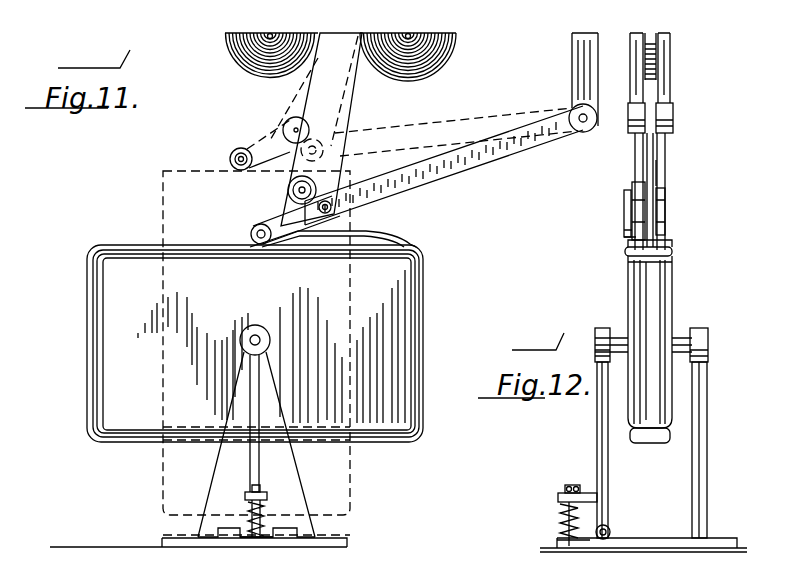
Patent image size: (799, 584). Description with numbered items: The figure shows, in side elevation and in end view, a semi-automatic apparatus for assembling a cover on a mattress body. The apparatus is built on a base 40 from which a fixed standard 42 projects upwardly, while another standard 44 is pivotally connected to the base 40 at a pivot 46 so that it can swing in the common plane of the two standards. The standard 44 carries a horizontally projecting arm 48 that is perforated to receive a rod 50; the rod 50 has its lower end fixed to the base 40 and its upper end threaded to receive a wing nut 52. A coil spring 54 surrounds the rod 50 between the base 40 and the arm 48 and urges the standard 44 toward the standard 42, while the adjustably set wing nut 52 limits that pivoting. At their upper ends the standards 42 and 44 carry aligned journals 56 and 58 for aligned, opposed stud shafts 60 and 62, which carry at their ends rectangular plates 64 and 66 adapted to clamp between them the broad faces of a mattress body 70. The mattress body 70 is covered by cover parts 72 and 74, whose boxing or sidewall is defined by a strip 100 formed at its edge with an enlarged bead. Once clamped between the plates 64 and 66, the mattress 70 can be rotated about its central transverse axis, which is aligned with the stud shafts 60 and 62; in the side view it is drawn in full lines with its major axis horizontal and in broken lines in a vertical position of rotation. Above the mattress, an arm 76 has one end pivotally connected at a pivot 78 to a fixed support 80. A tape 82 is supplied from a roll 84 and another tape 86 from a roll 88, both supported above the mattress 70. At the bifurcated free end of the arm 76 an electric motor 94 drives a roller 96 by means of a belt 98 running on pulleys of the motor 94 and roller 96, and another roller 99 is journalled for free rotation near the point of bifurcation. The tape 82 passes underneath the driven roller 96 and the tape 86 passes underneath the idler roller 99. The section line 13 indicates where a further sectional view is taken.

In FIG. 12, the section line 13 is at (664, 173).
In FIG. 11, the base 40 is at (238, 540).
In FIG. 12, the base 40 is at (672, 545).
In FIG. 12, the fixed standard 42 is at (698, 498).
In FIG. 11, the standard 44 is at (245, 490).
In FIG. 12, the standard 44 is at (597, 437).
In FIG. 11, the pivot 46 is at (318, 510).
In FIG. 12, the pivot 46 is at (612, 530).
In FIG. 11, the arm 48 is at (295, 515).
In FIG. 12, the arm 48 is at (558, 495).
In FIG. 11, the rod 50 is at (248, 520).
In FIG. 12, the rod 50 is at (562, 513).
In FIG. 11, the wing nut 52 is at (256, 488).
In FIG. 12, the wing nut 52 is at (568, 485).
In FIG. 11, the coil spring 54 is at (245, 497).
In FIG. 12, the coil spring 54 is at (566, 527).
In FIG. 12, the journal 56 is at (708, 328).
In FIG. 11, the journal 58 is at (259, 327).
In FIG. 12, the journal 58 is at (598, 328).
In FIG. 12, the stud shaft 60 is at (682, 336).
In FIG. 12, the stud shaft 62 is at (617, 336).
In FIG. 12, the rectangular plate 64 is at (675, 291).
In FIG. 11, the rectangular plate 66 is at (230, 284).
In FIG. 12, the rectangular plate 66 is at (628, 286).
In FIG. 11, the mattress body 70 is at (88, 441).
In FIG. 12, the mattress body 70 is at (660, 446).
In FIG. 12, the cover part 72 is at (677, 248).
In FIG. 12, the cover part 74 is at (622, 248).
In FIG. 11, the arm 76 is at (453, 176).
In FIG. 12, the arm 76 is at (660, 154).
In FIG. 11, the pivot 78 is at (583, 132).
In FIG. 12, the pivot 78 is at (672, 118).
In FIG. 11, the fixed support 80 is at (572, 74).
In FIG. 12, the fixed support 80 is at (670, 56).
In FIG. 11, the tape 82 is at (300, 105).
In FIG. 11, the roll 84 is at (255, 68).
In FIG. 11, the tape 86 is at (353, 109).
In FIG. 12, the tape 86 is at (650, 56).
In FIG. 11, the roll 88 is at (437, 68).
In FIG. 11, the electric motor 94 is at (288, 195).
In FIG. 12, the electric motor 94 is at (665, 195).
In FIG. 11, the roller 96 is at (251, 234).
In FIG. 12, the belt 98 is at (624, 214).
In FIG. 11, the roller 99 is at (331, 200).
In FIG. 11, the strip 100 is at (365, 227).